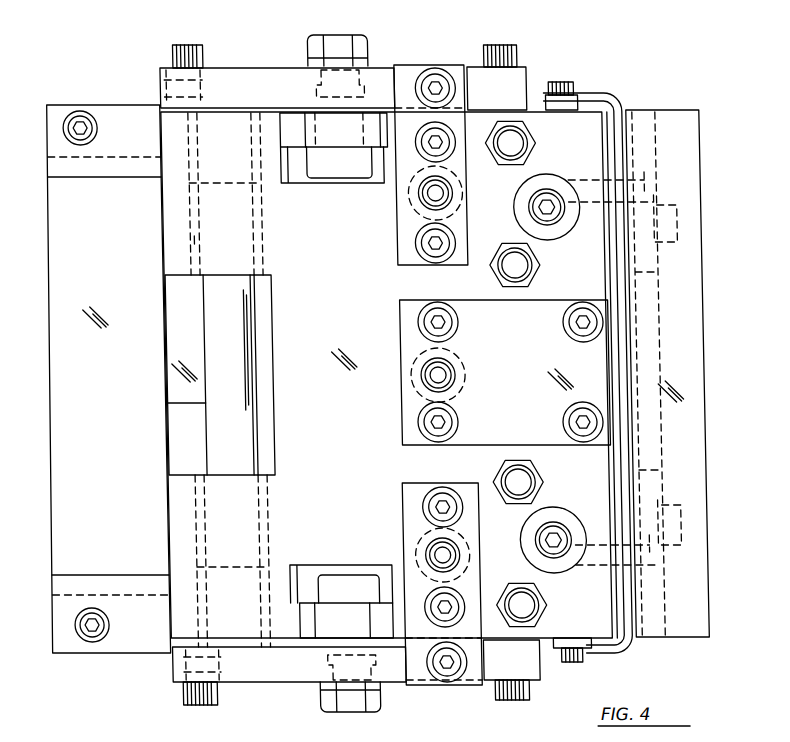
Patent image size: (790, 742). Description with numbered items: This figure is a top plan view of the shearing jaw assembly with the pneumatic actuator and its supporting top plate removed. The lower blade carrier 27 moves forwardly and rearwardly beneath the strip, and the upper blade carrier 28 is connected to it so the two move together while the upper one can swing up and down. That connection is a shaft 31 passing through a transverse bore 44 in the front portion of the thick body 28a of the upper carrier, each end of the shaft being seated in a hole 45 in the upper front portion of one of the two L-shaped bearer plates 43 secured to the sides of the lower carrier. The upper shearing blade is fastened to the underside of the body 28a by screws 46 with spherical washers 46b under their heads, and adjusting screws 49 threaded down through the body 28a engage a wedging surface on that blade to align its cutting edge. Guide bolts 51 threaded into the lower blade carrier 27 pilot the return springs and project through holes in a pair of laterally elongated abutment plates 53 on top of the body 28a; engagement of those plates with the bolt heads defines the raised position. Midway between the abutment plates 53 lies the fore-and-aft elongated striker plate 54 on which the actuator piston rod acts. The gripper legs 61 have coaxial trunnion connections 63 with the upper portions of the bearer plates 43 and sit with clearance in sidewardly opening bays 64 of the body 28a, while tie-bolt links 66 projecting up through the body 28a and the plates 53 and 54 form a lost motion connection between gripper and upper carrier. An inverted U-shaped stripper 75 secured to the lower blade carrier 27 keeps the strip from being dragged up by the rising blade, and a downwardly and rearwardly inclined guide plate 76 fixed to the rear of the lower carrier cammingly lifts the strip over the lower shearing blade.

The lower blade carrier 27 is at (182, 372).
The upper blade carrier 28 is at (342, 307).
The body of the upper blade carrier 28a is at (200, 240).
The shaft 31 is at (167, 403).
The L-shaped supporting plates 43 is at (292, 68).
The transverse bore 44 is at (200, 252).
The hole 45 is at (251, 68).
The screws 46 is at (556, 210).
The spherical washers 46b is at (565, 188).
The adjusting screws 49 is at (521, 143).
The guide bolts 51 is at (446, 70).
The abutment plates 53 is at (406, 66).
The striker plate 54 is at (502, 355).
The gripper legs 61 is at (302, 150).
The trunnion connections 63 is at (347, 168).
The bays 64 is at (388, 181).
The links 66 is at (432, 195).
The stripper 75 is at (606, 93).
The guide plate 76 is at (681, 110).